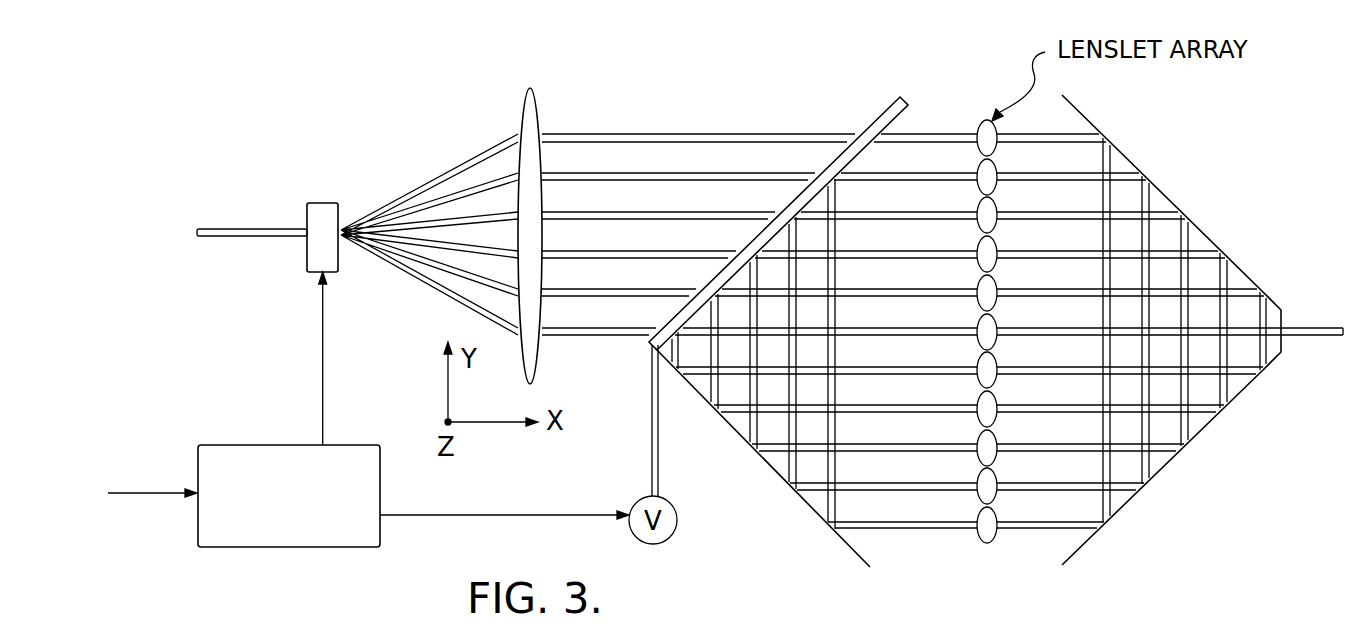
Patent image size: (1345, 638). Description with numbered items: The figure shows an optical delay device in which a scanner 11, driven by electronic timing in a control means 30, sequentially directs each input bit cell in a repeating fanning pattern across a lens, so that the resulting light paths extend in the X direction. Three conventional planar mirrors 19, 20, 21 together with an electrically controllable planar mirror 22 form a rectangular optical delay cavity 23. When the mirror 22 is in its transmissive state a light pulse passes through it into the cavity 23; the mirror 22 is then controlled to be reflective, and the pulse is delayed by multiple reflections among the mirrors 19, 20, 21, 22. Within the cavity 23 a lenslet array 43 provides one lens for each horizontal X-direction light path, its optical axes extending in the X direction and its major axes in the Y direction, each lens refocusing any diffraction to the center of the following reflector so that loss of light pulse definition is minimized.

The scanner 11 is at (278, 291).
The planar mirror 19 is at (1199, 236).
The planar mirror 20 is at (1176, 462).
The planar mirror 21 is at (770, 471).
The electrically controllable planar mirror 22 is at (882, 117).
The optical delay cavity 23 is at (945, 537).
The control means 30 is at (282, 443).
The lenslet array 43 is at (967, 109).